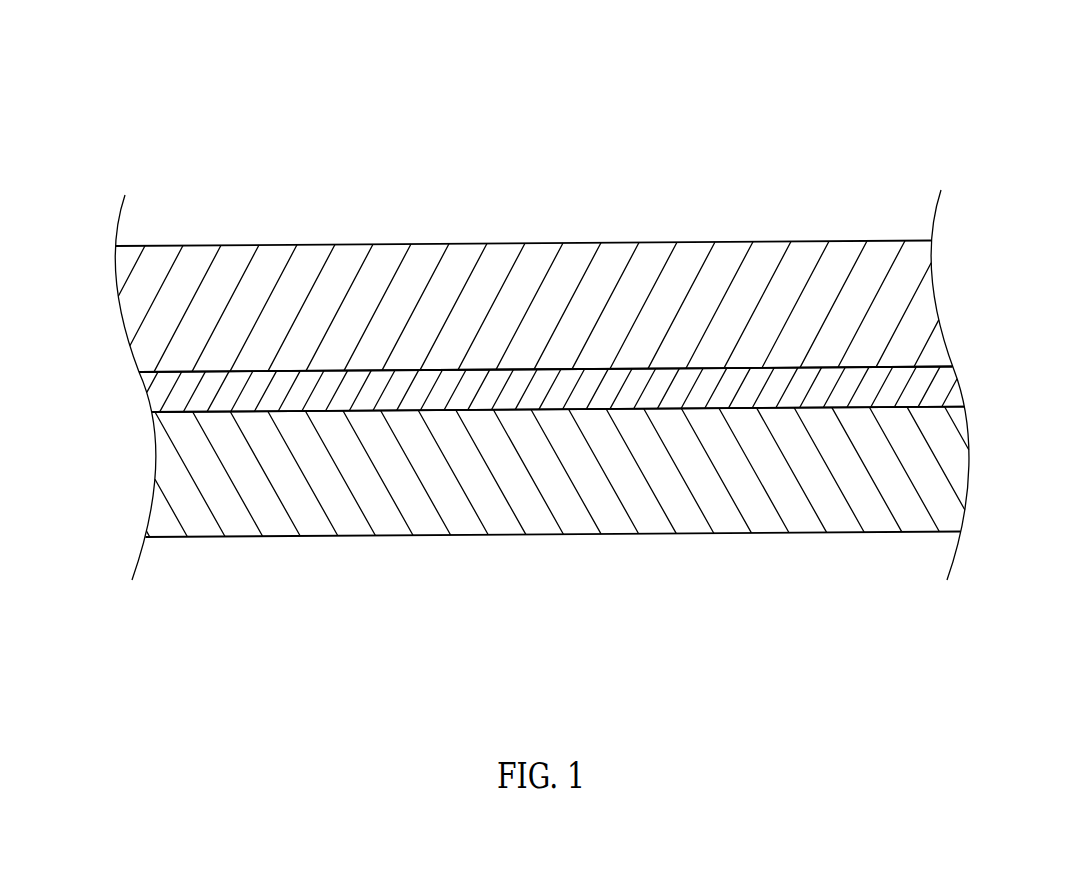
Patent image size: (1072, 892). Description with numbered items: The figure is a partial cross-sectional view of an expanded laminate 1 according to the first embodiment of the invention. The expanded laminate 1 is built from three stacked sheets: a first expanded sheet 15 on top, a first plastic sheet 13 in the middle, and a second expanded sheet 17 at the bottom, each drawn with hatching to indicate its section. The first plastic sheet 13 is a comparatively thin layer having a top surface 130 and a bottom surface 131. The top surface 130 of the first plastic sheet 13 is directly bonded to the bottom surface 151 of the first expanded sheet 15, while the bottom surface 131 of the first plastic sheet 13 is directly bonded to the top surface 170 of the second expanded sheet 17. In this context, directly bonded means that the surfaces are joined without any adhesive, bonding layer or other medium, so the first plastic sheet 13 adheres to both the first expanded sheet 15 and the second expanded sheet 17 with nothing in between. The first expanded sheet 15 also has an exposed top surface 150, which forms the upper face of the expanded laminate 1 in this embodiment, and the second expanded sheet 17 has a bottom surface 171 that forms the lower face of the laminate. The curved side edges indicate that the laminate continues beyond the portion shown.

The expanded laminate 1 is at (802, 137).
The first expanded sheet 15 is at (165, 279).
The top surface of the first expanded sheet 150 is at (903, 244).
The bottom surface of the first expanded sheet 151 is at (948, 366).
The first plastic sheet 13 is at (165, 387).
The top surface of the first plastic sheet 130 is at (915, 364).
The bottom surface of the first plastic sheet 131 is at (962, 410).
The second expanded sheet 17 is at (167, 492).
The top surface of the second expanded sheet 170 is at (953, 402).
The bottom surface of the second expanded sheet 171 is at (945, 533).